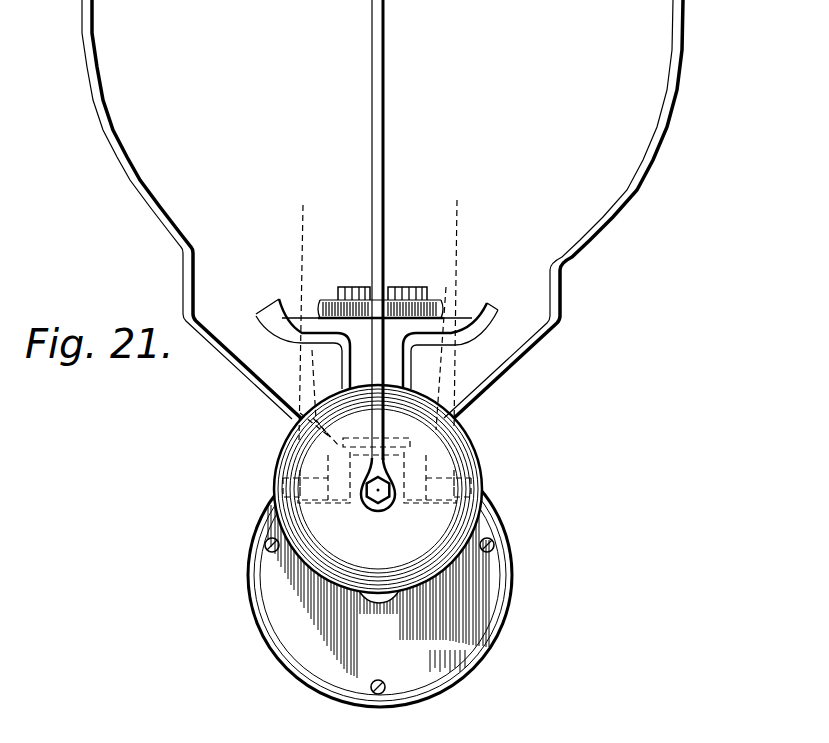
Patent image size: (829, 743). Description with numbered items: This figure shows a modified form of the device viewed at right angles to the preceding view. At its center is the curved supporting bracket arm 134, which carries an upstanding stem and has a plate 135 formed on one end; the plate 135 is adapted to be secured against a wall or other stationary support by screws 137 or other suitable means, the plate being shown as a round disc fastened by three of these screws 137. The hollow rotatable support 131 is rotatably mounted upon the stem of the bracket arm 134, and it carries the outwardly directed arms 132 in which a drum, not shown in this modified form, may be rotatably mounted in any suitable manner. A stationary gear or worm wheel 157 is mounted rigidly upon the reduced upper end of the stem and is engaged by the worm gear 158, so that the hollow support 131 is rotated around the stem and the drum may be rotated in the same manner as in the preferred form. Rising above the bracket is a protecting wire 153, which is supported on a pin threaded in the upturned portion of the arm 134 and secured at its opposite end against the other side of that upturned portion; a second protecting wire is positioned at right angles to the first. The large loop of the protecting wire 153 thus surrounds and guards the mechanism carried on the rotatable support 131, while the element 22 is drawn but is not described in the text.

The shaft 22 is at (370, 320).
The hollow rotatable support 131 is at (352, 358).
The outwardly directed arms 132 is at (483, 322).
The curved supporting bracket arm 134 is at (402, 597).
The plate 135 is at (292, 592).
The screws 137 is at (264, 544).
The protecting wire 153 is at (134, 190).
The stationary gear or worm wheel 157 is at (437, 302).
The worm gear 158 is at (433, 262).